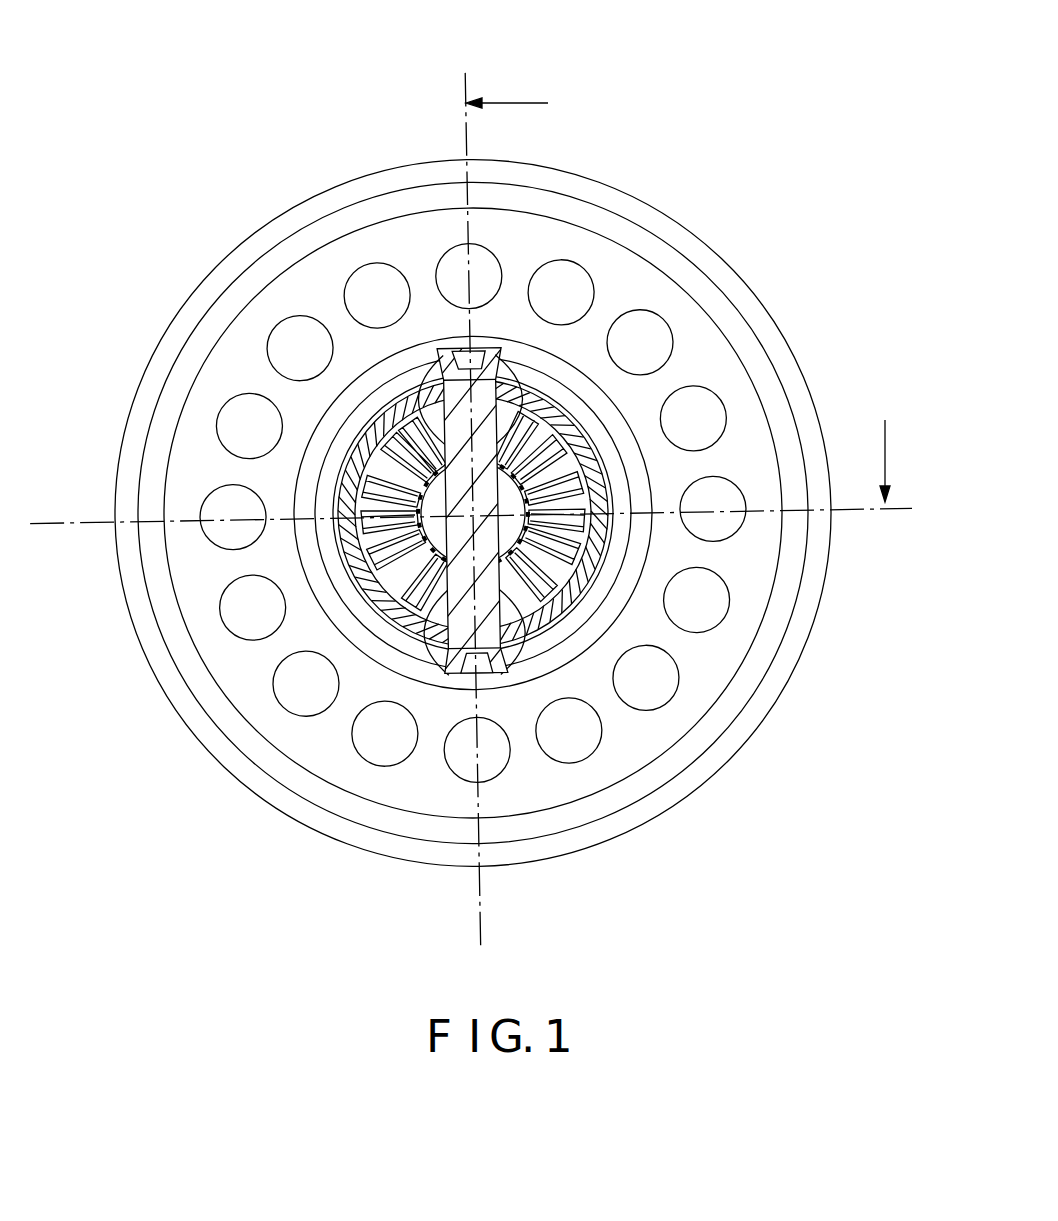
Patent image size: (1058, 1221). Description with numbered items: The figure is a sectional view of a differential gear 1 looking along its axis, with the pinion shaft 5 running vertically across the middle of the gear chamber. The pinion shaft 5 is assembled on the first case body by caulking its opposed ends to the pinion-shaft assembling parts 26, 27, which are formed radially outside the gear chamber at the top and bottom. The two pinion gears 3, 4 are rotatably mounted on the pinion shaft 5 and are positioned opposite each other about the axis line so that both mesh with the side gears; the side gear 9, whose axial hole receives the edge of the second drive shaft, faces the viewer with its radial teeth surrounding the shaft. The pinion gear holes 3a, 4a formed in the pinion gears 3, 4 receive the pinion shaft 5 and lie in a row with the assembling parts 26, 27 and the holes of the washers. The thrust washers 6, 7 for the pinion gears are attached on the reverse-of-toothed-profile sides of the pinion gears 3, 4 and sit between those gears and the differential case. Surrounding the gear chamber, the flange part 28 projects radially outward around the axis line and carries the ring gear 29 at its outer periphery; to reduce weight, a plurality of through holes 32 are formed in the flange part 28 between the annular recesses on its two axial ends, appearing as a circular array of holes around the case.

The differential gear 1 is at (470, 481).
The pinion gear 3 is at (547, 425).
The pinion gear hole 3a is at (507, 387).
The pinion gear 4 is at (530, 655).
The pinion gear hole 4a is at (533, 647).
The pinion shaft 5 is at (380, 507).
The thrust washer 6 is at (412, 395).
The thrust washer 7 is at (452, 624).
The side gear 9 is at (585, 618).
The pinion-shaft assembling part 26 is at (490, 353).
The pinion-shaft assembling part 27 is at (486, 652).
The flange part 28 is at (268, 297).
The ring gear 29 is at (168, 330).
The through holes 32 is at (282, 675).